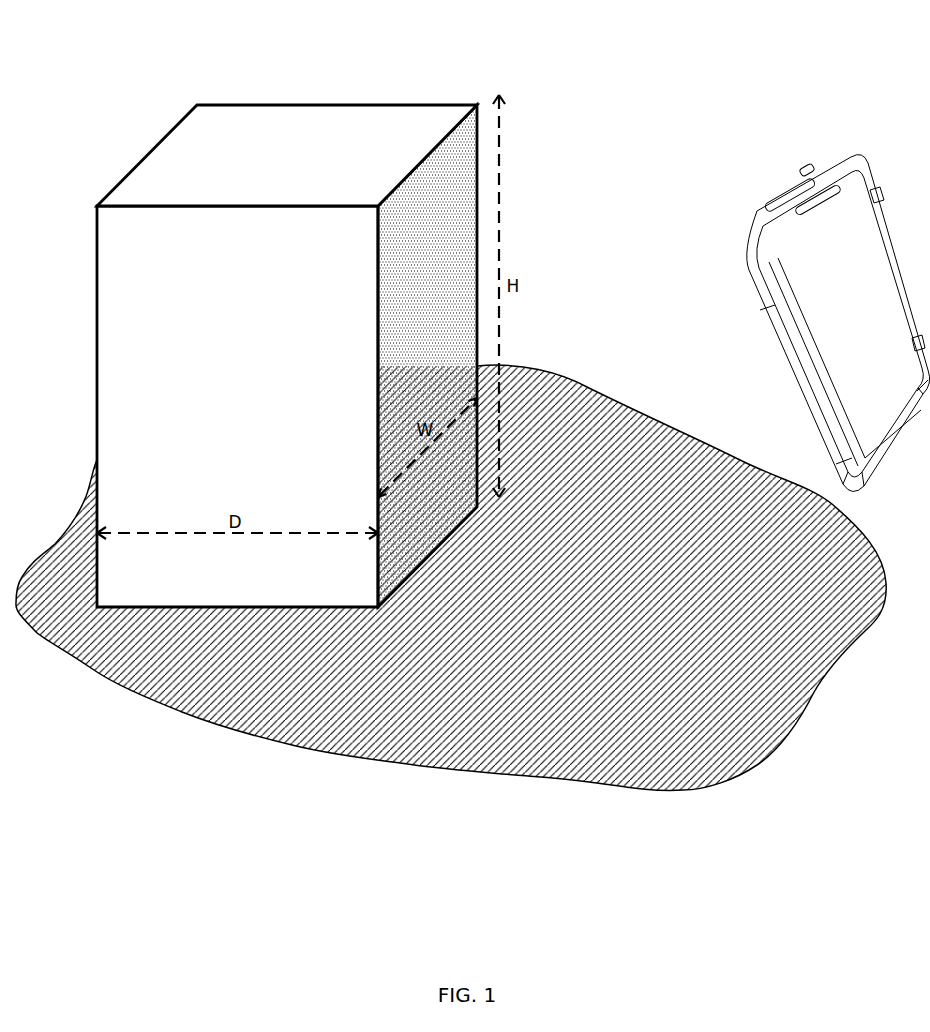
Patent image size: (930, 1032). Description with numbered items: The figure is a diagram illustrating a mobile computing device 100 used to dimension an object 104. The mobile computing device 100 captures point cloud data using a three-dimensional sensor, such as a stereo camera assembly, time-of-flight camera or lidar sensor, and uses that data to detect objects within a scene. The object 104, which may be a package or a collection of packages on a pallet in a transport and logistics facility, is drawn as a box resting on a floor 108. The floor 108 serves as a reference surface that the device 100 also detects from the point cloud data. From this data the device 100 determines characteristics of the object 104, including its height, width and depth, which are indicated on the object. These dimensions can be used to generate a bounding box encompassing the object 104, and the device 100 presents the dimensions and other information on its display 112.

The mobile computing device 100 is at (833, 147).
The object 104 is at (242, 128).
The floor 108 is at (423, 750).
The display 112 is at (843, 337).